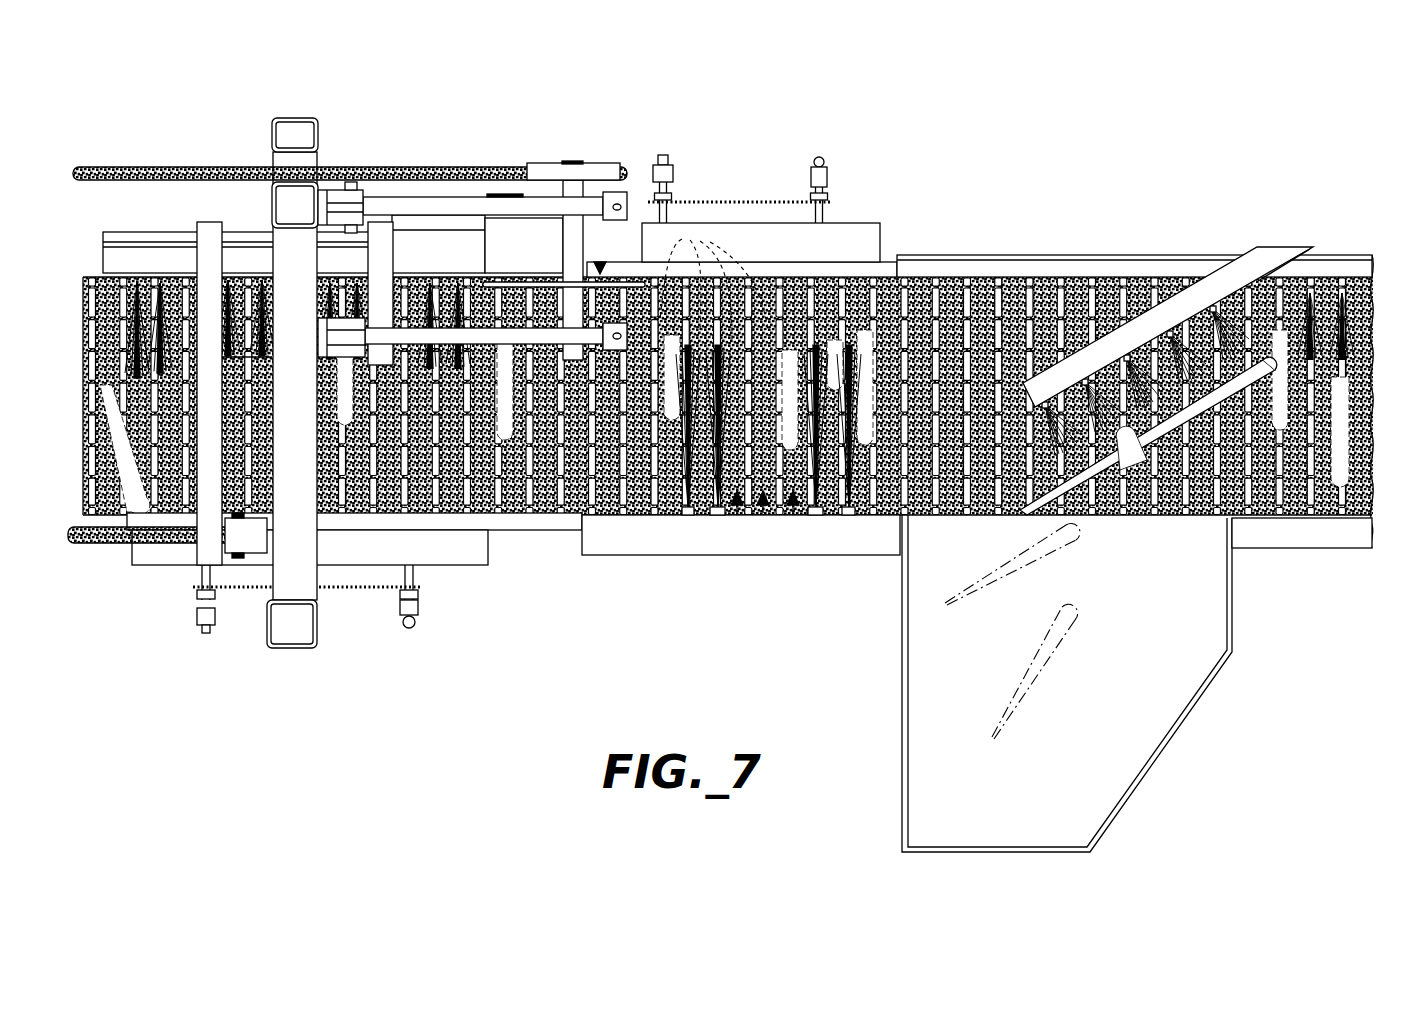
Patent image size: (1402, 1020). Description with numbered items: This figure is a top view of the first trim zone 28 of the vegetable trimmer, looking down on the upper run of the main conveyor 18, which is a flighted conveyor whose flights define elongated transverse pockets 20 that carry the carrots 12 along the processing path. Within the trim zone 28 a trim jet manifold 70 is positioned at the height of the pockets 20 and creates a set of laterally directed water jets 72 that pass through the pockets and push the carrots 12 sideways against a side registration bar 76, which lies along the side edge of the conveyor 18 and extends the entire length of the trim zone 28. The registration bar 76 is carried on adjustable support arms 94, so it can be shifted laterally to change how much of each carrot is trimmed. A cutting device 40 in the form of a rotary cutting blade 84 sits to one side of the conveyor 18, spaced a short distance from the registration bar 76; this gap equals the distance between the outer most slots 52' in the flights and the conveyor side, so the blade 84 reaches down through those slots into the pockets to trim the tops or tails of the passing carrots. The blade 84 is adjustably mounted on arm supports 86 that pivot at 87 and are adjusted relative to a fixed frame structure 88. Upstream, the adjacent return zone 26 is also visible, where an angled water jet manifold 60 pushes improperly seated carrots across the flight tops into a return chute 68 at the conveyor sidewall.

The carrots 12 is at (761, 281).
The main conveyor 18 is at (546, 500).
The transverse pockets 20 is at (737, 513).
The return zone 26 is at (1196, 124).
The trim zone 28 is at (761, 110).
The cutting device 40 is at (600, 262).
The outer most slots 52' is at (1097, 327).
The angled water jet manifold 60 is at (1205, 287).
The return chute 68 is at (1183, 695).
The trim jet manifold 70 is at (735, 555).
The laterally directed water jets 72 is at (712, 515).
The side registration bar 76 is at (895, 262).
The rotary cutting blade 84 is at (545, 282).
The arm supports 86 is at (415, 197).
The pivot 87 is at (360, 183).
The fixed frame structure 88 is at (295, 118).
The adjustable support arms 94 is at (675, 207).